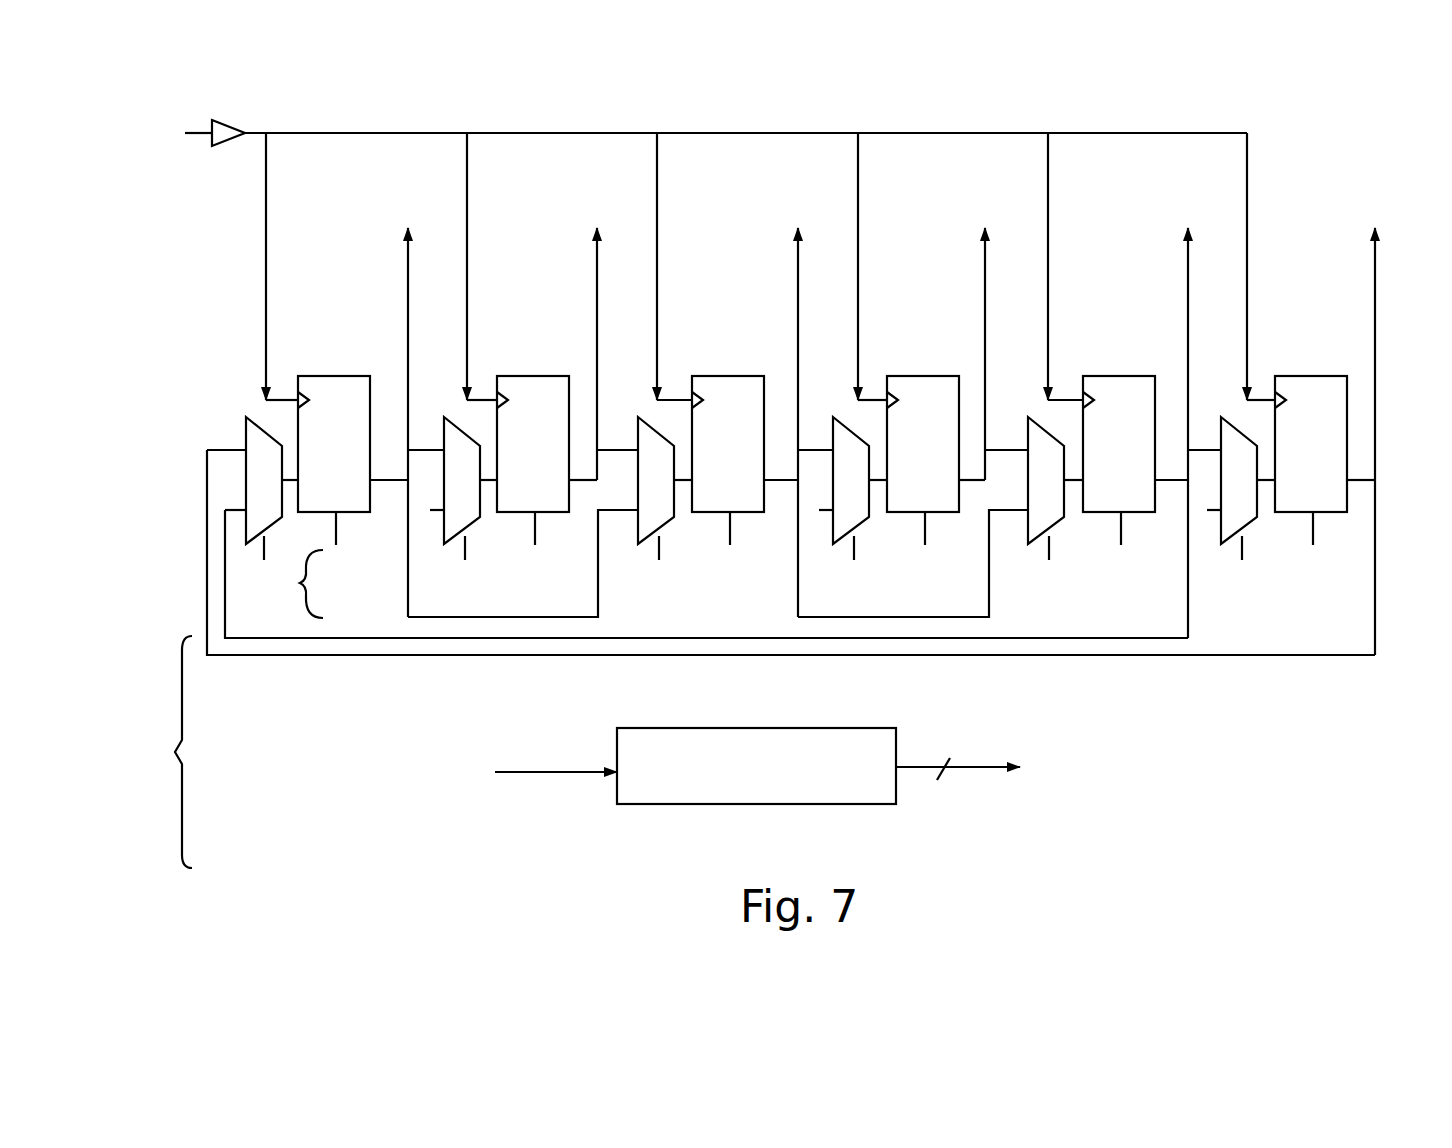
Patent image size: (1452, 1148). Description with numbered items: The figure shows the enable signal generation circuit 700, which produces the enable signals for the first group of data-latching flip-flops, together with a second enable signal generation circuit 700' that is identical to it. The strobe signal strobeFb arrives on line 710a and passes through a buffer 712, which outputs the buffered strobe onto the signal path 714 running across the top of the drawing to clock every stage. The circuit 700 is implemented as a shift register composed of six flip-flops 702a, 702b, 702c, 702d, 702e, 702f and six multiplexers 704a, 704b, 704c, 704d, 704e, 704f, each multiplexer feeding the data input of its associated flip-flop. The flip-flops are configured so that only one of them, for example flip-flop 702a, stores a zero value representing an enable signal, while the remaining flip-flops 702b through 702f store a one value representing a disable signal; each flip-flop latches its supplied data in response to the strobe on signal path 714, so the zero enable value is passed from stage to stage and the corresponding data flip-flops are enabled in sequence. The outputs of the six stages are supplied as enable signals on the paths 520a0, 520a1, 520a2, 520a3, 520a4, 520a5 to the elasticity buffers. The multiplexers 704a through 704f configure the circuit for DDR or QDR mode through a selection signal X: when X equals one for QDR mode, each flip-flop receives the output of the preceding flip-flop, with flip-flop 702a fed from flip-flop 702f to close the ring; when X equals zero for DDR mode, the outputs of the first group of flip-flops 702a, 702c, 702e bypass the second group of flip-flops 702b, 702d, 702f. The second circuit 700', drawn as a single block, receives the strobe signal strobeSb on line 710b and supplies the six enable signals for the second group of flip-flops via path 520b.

The enable signal generation circuit 700 is at (792, 478).
The second enable signal generation circuit 700' is at (756, 748).
The line 710a is at (193, 133).
The line 710b is at (535, 772).
The buffer 712 is at (232, 147).
The signal path 714 is at (735, 133).
The flip-flop 702a is at (326, 378).
The flip-flop 702b is at (525, 378).
The flip-flop 702c is at (720, 378).
The flip-flop 702d is at (915, 378).
The flip-flop 702e is at (1111, 378).
The flip-flop 702f is at (1303, 378).
The multiplexer 704a is at (247, 428).
The multiplexer 704b is at (445, 428).
The multiplexer 704c is at (639, 428).
The multiplexer 704d is at (834, 428).
The multiplexer 704e is at (1029, 428).
The multiplexer 704f is at (1222, 428).
The path 520a0 is at (408, 283).
The path 520a1 is at (597, 283).
The path 520a2 is at (798, 283).
The path 520a3 is at (985, 283).
The path 520a4 is at (1188, 283).
The path 520a5 is at (808, 427).
The path 520b is at (985, 770).